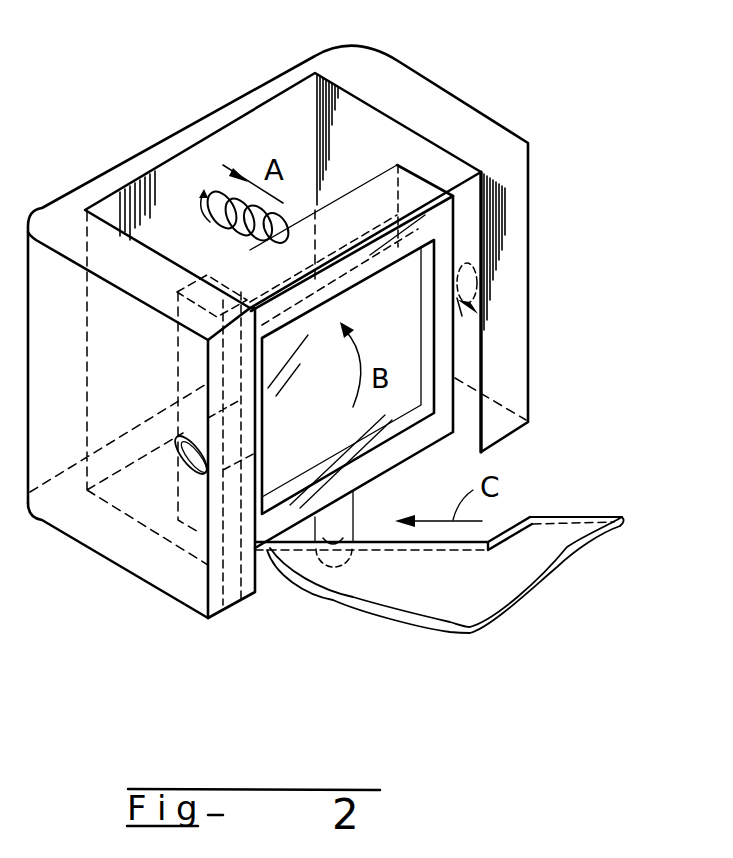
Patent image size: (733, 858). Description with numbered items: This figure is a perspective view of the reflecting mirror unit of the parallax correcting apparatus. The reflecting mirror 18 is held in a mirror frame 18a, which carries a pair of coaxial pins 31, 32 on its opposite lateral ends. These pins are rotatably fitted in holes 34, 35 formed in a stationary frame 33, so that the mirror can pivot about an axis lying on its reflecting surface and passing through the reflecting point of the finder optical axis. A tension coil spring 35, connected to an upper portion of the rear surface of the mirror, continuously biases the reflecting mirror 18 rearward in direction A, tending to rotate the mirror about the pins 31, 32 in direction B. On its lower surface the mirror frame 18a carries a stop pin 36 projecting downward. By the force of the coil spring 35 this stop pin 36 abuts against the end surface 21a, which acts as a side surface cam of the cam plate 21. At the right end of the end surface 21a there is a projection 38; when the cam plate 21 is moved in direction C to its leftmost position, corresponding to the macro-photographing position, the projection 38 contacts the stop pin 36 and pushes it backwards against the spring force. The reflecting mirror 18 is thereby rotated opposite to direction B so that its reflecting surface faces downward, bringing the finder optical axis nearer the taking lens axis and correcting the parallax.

The reflecting mirror 18 is at (400, 285).
The mirror frame 18a is at (373, 193).
The cam plate 21 is at (465, 593).
The end surface 21a is at (373, 540).
The pin 31 is at (232, 577).
The pin 32 is at (470, 302).
The stationary frame 33 is at (108, 178).
The hole 34 is at (188, 477).
The tension coil spring 35 is at (220, 197).
The stop pin 36 is at (332, 528).
The projection 38 is at (530, 513).